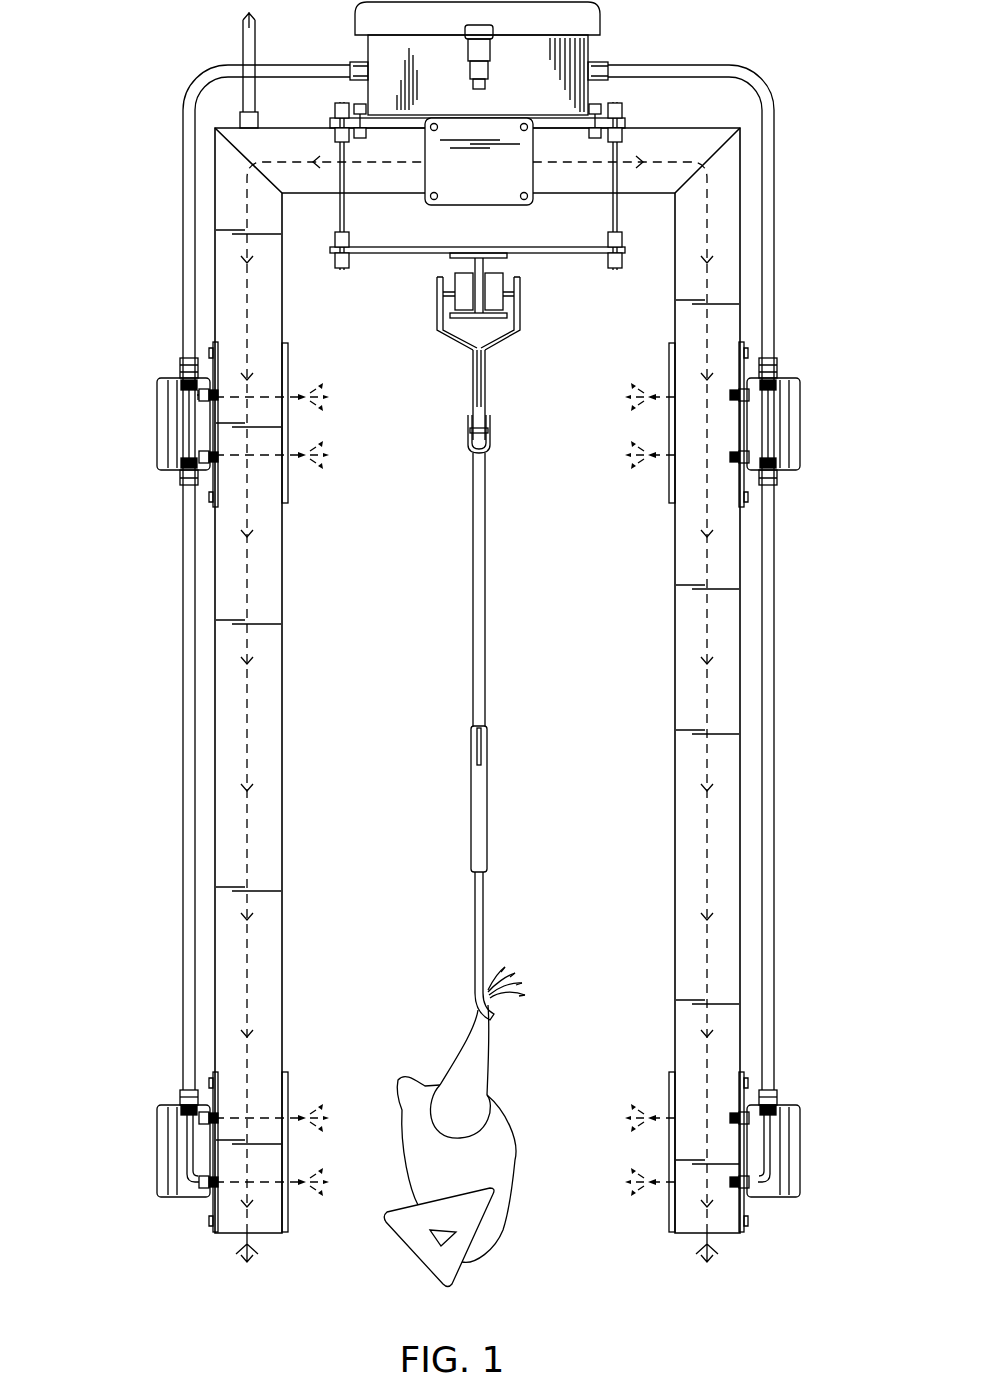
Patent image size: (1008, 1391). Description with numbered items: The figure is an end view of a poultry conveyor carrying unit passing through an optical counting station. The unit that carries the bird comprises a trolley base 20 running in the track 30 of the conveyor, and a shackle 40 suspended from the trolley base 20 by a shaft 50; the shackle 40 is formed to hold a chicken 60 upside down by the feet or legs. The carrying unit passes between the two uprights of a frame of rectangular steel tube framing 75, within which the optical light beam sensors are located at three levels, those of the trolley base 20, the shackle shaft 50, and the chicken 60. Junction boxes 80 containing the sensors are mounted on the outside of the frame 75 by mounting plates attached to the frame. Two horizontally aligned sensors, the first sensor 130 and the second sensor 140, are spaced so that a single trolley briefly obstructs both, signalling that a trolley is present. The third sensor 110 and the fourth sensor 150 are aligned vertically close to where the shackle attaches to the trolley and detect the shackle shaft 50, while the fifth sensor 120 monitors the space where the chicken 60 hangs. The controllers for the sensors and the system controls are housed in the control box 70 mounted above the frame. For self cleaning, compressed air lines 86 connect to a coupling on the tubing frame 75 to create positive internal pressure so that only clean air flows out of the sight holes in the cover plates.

The trolley base 20 is at (473, 383).
The track 30 is at (483, 318).
The shackle 40 is at (485, 912).
The shaft 50 is at (485, 568).
The chicken 60 is at (490, 1093).
The control box 70 is at (600, 12).
The rectangular steel tube framing 75 is at (282, 790).
The junction boxes 80 is at (157, 422).
The compressed air lines 86 is at (242, 48).
The Sensor 3 110 is at (222, 458).
The Sensor 5 120 is at (220, 1118).
The Sensor 1 130 is at (225, 388).
The Sensor 2 140 is at (216, 392).
The Sensor 4 150 is at (221, 1190).